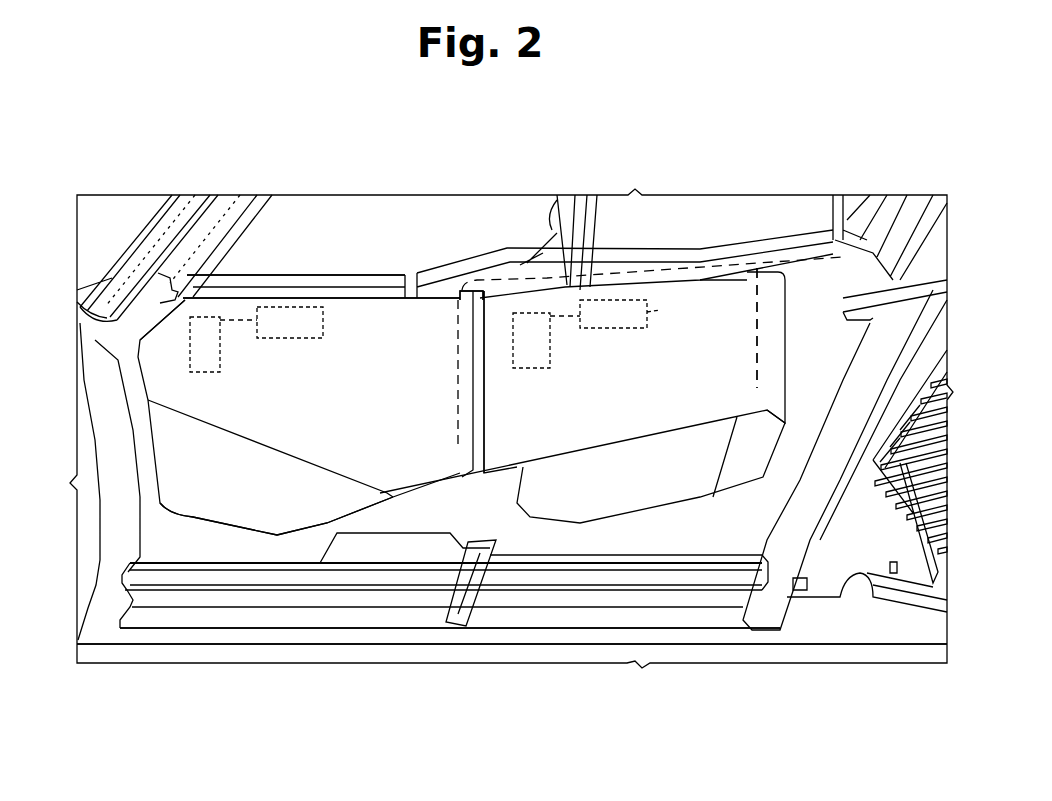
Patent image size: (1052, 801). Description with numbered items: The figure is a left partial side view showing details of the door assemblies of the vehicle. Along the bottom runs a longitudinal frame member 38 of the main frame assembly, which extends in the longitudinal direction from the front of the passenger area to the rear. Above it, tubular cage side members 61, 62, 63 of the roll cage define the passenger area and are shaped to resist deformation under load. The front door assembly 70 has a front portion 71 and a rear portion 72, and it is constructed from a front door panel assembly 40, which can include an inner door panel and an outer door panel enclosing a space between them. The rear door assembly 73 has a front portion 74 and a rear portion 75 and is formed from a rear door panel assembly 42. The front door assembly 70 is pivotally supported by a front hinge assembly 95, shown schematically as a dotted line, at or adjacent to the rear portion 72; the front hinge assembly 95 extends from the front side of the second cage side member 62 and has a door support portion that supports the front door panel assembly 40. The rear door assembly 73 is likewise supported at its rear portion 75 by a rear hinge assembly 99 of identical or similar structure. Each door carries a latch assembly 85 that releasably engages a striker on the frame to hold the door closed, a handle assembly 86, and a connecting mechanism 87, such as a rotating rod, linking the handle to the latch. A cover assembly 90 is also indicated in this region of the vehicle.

The longitudinal frame member 38 is at (233, 617).
The front door panel assembly 40 is at (247, 430).
The rear door panel assembly 42 is at (637, 427).
The cage side member 61 is at (172, 224).
The second cage side member 62 is at (568, 217).
The cage side member 63 is at (910, 217).
The front door assembly 70 is at (370, 317).
The front portion 71 is at (160, 350).
The rear portion 72 is at (463, 418).
The rear door assembly 73 is at (700, 280).
The front portion 74 is at (495, 418).
The rear portion 75 is at (780, 340).
The latch assembly 85 is at (207, 328).
The handle assembly 86 is at (290, 320).
The connecting mechanism 87 is at (240, 320).
The cover assembly 90 is at (523, 320).
The front hinge assembly 95 is at (455, 368).
The rear hinge assembly 99 is at (755, 345).